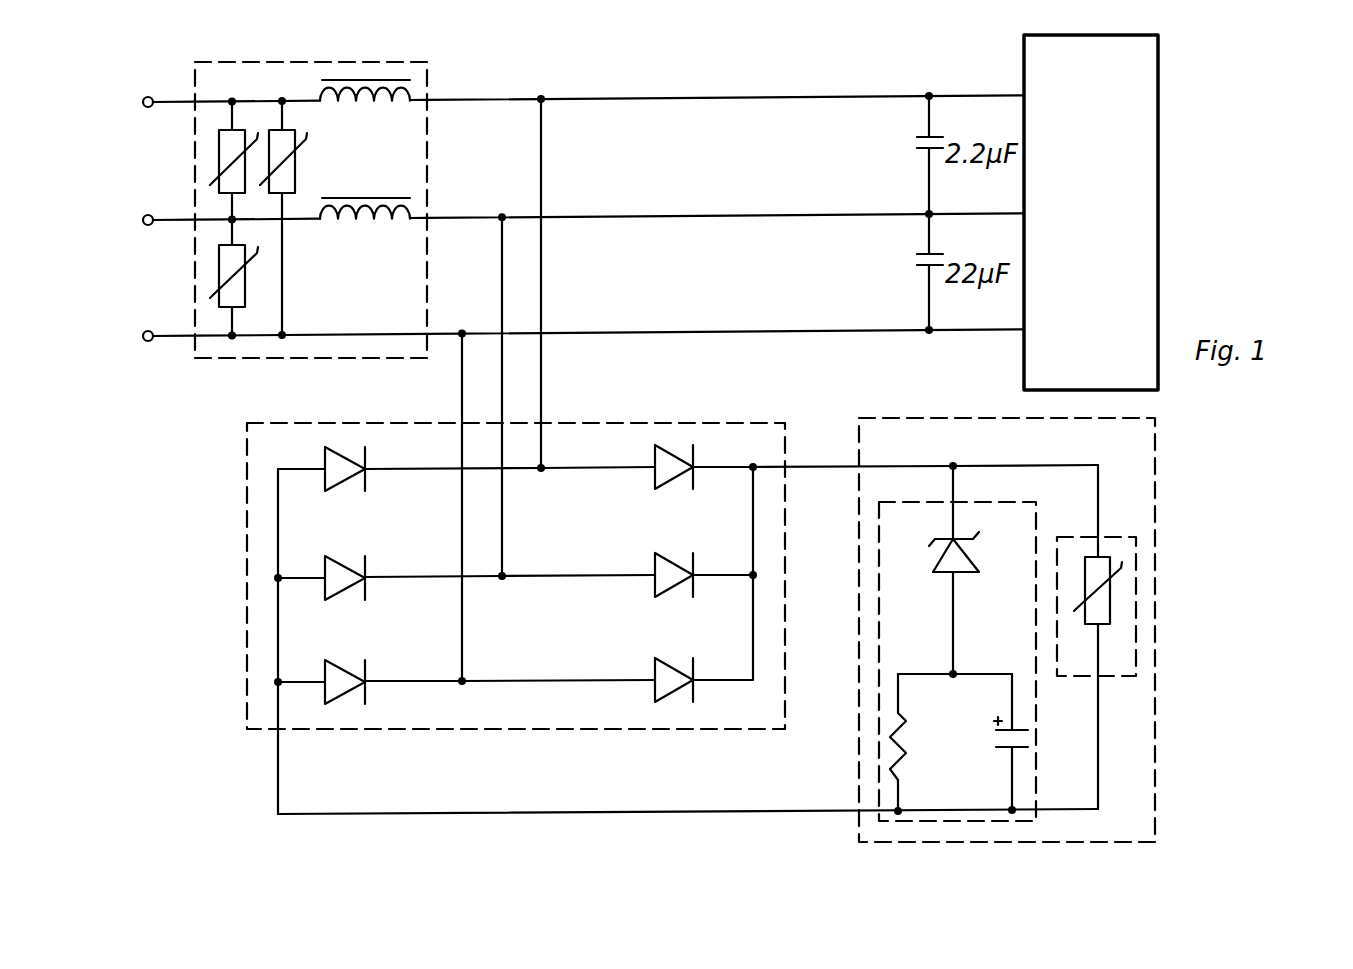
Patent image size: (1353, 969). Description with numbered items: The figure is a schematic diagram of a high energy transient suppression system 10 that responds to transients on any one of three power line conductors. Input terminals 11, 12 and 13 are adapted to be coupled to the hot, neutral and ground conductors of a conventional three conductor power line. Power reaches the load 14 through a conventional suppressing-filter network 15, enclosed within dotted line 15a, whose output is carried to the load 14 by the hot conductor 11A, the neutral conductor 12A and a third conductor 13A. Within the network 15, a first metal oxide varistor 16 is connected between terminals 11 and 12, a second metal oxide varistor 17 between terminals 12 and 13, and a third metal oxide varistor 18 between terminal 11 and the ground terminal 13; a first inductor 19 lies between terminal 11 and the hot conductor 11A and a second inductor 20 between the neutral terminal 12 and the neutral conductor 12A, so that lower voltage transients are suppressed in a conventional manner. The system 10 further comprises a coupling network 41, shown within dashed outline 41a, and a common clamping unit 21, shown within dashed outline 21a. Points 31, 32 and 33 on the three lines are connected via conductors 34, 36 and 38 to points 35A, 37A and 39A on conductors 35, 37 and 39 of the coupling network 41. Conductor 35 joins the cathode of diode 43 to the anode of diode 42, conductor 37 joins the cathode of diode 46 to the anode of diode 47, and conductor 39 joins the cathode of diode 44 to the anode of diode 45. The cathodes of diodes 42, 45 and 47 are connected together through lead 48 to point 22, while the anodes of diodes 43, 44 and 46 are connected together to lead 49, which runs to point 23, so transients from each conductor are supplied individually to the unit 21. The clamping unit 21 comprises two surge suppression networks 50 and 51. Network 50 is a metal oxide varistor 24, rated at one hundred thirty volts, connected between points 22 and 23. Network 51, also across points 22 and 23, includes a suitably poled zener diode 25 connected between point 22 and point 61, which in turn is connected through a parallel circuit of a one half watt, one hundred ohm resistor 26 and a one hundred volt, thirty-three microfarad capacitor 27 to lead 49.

The high energy transient suppression system 10 is at (318, 831).
The input terminal 11 is at (148, 96).
The input terminal 12 is at (148, 214).
The input terminal 13 is at (146, 331).
The hot conductor 11A is at (868, 94).
The neutral conductor 12A is at (858, 212).
The third AC output line to load 13A is at (790, 329).
The load 14 is at (1158, 128).
The suppressing-filter network 15 is at (348, 200).
The dotted line 15a is at (427, 62).
The first metal oxide varistor 16 is at (219, 147).
The second metal oxide varistor 17 is at (219, 257).
The third metal oxide varistor 18 is at (296, 178).
The first inductor 19 is at (374, 102).
The second inductor 20 is at (345, 221).
The common clamping unit 21 is at (1167, 637).
The surge protection circuit enclosure 21a is at (1155, 468).
The point 22 is at (953, 464).
The point 23 is at (896, 812).
The metal oxide varistor 24 is at (1110, 592).
The zener diode 25 is at (976, 567).
The resistor 26 is at (946, 705).
The capacitor 27 is at (1000, 730).
The point 31 is at (543, 101).
The point 32 is at (516, 180).
The point 33 is at (487, 293).
The conductor 34 is at (542, 307).
The conductor 35 is at (640, 466).
The point 35A is at (541, 470).
The conductor 36 is at (503, 396).
The conductor 37 is at (595, 574).
The point 37A is at (503, 577).
The conductor 38 is at (462, 432).
The conductor 39 is at (555, 679).
The point 39A is at (463, 683).
The coupling network 41 is at (452, 601).
The rectifier enclosure 41a is at (247, 480).
The diode 42 is at (678, 478).
The diode 43 is at (343, 480).
The diode 44 is at (343, 690).
The diode 45 is at (672, 693).
The diode 46 is at (343, 588).
The diode 47 is at (672, 588).
The lead 48 is at (914, 463).
The lead 49 is at (597, 814).
The surge suppression network 50 is at (1167, 637).
The surge suppression network 51 is at (1010, 648).
The point 61 is at (951, 673).